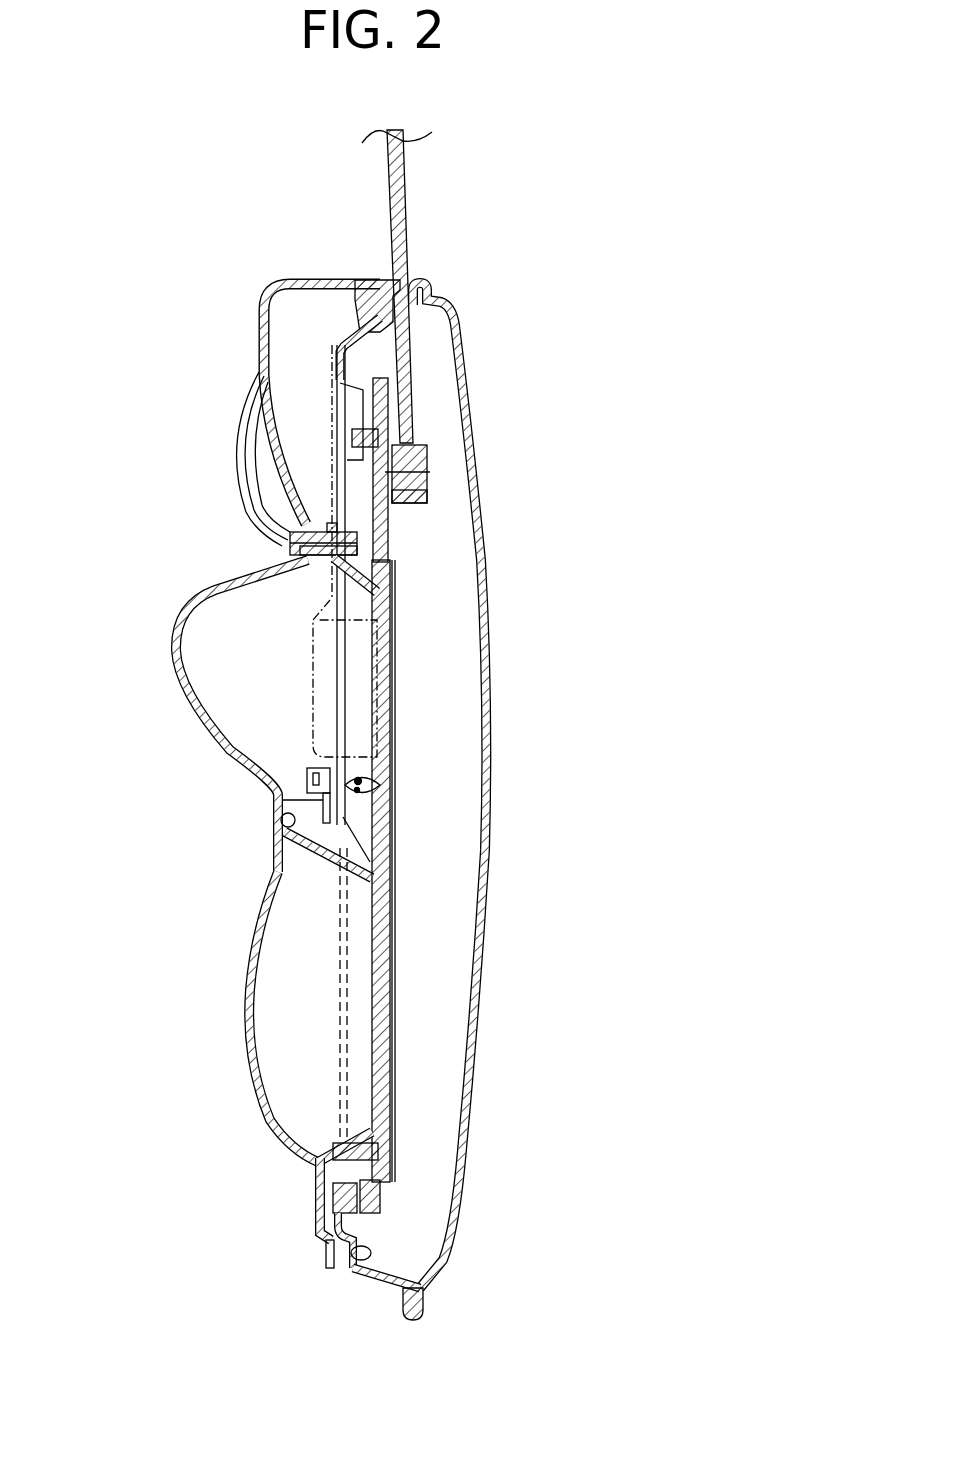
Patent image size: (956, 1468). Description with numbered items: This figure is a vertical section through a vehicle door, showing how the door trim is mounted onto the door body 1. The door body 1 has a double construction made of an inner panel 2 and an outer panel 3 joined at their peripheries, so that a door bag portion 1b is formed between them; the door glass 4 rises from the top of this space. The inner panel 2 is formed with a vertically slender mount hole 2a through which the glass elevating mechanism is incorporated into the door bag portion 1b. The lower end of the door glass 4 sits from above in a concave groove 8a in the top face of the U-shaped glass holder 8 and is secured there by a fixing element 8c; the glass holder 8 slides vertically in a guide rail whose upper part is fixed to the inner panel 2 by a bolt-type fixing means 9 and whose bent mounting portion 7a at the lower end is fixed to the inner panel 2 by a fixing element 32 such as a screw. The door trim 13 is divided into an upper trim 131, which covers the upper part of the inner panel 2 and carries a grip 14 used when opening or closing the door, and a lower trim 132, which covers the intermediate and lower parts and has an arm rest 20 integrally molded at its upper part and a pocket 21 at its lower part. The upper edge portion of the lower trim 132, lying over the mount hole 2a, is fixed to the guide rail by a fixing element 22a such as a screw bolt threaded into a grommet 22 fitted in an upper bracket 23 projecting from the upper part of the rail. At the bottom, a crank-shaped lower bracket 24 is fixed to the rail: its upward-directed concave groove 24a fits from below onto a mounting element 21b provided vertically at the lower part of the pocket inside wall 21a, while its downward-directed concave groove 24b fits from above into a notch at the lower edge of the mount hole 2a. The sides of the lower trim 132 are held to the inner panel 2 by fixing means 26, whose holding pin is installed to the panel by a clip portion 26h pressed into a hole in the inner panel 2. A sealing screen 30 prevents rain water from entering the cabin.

The door body 1 is at (490, 1053).
The door bag portion 1b is at (450, 899).
The inner panel 2 is at (335, 1010).
The mount hole 2a is at (343, 668).
The outer panel 3 is at (488, 828).
The door glass 4 is at (405, 240).
The mounting portion 7a is at (433, 1262).
The glass holder 8 is at (427, 447).
The concave groove 8a is at (412, 507).
The fixing element 8c is at (428, 472).
The fixing means 9 is at (352, 440).
The door trim 13 is at (221, 576).
The upper trim 131 is at (297, 467).
The lower trim 132 is at (204, 711).
The grip 14 is at (246, 460).
The arm rest 20 is at (176, 653).
The pocket 21 is at (290, 947).
The pocket inside wall 21a is at (388, 987).
The mounting element 21b is at (383, 1152).
The grommet 22 is at (360, 532).
The fixing element 22a is at (380, 562).
The upper bracket 23 is at (382, 583).
The lower bracket 24 is at (383, 1212).
The upward-directed concave groove 24a is at (383, 1187).
The downward-directed concave groove 24b is at (333, 1210).
The fixing means 26 is at (283, 801).
The clip portion 26h is at (380, 760).
The sealing screen 30 is at (307, 745).
The fixing element 32 is at (330, 1250).